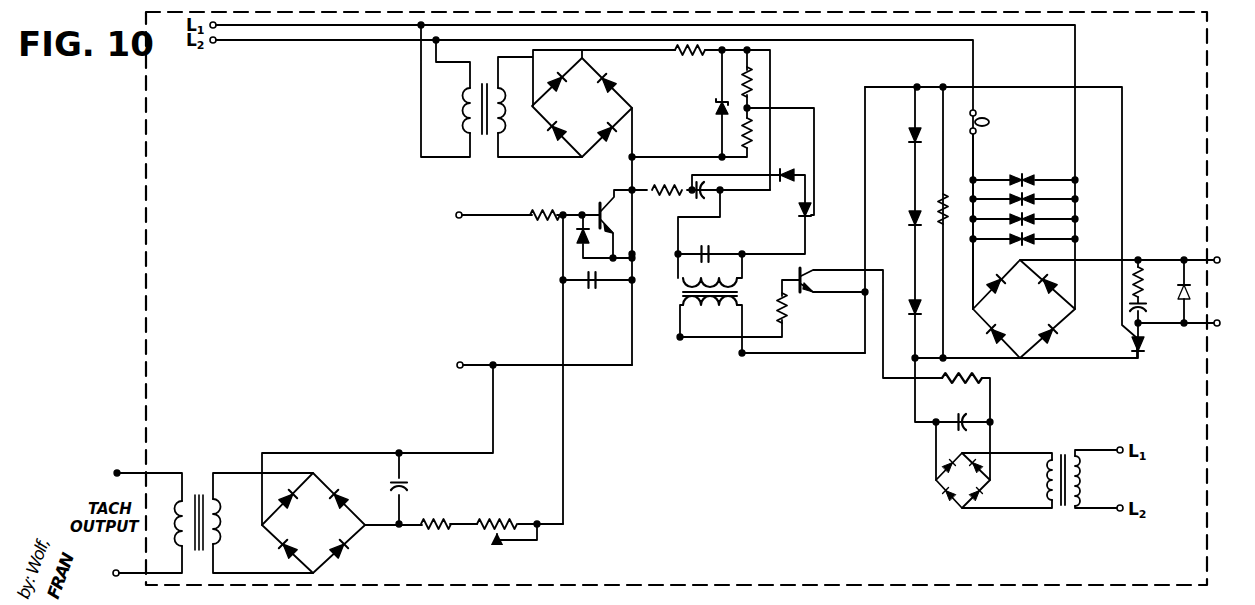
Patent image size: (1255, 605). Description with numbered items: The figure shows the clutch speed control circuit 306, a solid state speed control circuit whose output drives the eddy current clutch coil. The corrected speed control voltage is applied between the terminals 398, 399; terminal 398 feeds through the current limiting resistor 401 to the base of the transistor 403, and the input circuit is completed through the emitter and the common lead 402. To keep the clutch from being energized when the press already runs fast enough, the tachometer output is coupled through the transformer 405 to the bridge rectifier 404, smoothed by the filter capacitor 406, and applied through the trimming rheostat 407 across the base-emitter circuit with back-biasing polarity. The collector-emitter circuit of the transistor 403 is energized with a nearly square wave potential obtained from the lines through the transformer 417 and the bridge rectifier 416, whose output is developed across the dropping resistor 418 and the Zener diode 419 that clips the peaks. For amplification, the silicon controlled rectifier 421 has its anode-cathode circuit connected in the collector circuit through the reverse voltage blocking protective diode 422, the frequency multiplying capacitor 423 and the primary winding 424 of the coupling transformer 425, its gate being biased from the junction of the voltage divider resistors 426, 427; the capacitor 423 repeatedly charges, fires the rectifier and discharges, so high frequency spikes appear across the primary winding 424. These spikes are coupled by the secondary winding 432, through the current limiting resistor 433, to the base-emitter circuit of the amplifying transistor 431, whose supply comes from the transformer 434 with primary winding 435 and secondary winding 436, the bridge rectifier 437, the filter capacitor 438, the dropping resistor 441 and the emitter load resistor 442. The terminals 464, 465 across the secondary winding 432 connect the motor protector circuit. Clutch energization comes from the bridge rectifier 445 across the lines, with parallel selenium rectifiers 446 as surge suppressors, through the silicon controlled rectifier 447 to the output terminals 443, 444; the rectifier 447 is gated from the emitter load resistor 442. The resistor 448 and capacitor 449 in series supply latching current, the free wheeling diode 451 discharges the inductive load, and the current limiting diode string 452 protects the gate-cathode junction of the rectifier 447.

The clutch speed control circuit 306 is at (134, 230).
The terminal 398 is at (457, 213).
The terminal 399 is at (458, 368).
The current limiting resistor 401 is at (545, 205).
The common lead 402 is at (585, 367).
The transistor 403 is at (597, 204).
The bridge rectifier 404 is at (313, 523).
The transformer 405 is at (197, 488).
The filter capacitor 406 is at (405, 486).
The trimming rheostat 407 is at (490, 530).
The bridge rectifier 416 is at (582, 107).
The transformer 417 is at (485, 88).
The dropping resistor 418 is at (676, 55).
The Zener diode 419 is at (716, 112).
The silicon controlled rectifier 421 is at (809, 221).
The reverse voltage blocking protective diode 422 is at (787, 168).
The frequency multiplying capacitor 423 is at (676, 198).
The primary winding 424 is at (732, 276).
The coupling transformer 425 is at (674, 294).
The voltage divider resistor 426 is at (753, 82).
The voltage divider resistor 427 is at (753, 133).
The amplifying transistor 431 is at (803, 288).
The secondary winding 432 is at (710, 312).
The current limiting resistor 433 is at (787, 314).
The transformer 434 is at (1071, 460).
The primary winding 435 is at (1082, 481).
The secondary winding 436 is at (1046, 485).
The bridge rectifier 437 is at (963, 480).
The filter capacitor 438 is at (970, 420).
The dropping resistor 441 is at (984, 376).
The emitter load resistor 442 is at (948, 188).
The output terminal 443 is at (1218, 258).
The output terminal 444 is at (1218, 328).
The bridge rectifier 445 is at (1024, 309).
The selenium rectifiers 446 is at (1073, 178).
The silicon controlled rectifier 447 is at (1142, 350).
The resistor 448 is at (1144, 266).
The capacitor 449 is at (1142, 318).
The free wheeling diode 451 is at (1190, 292).
The current limiting diode string 452 is at (907, 212).
The terminal 464 is at (678, 338).
The terminal 465 is at (742, 356).